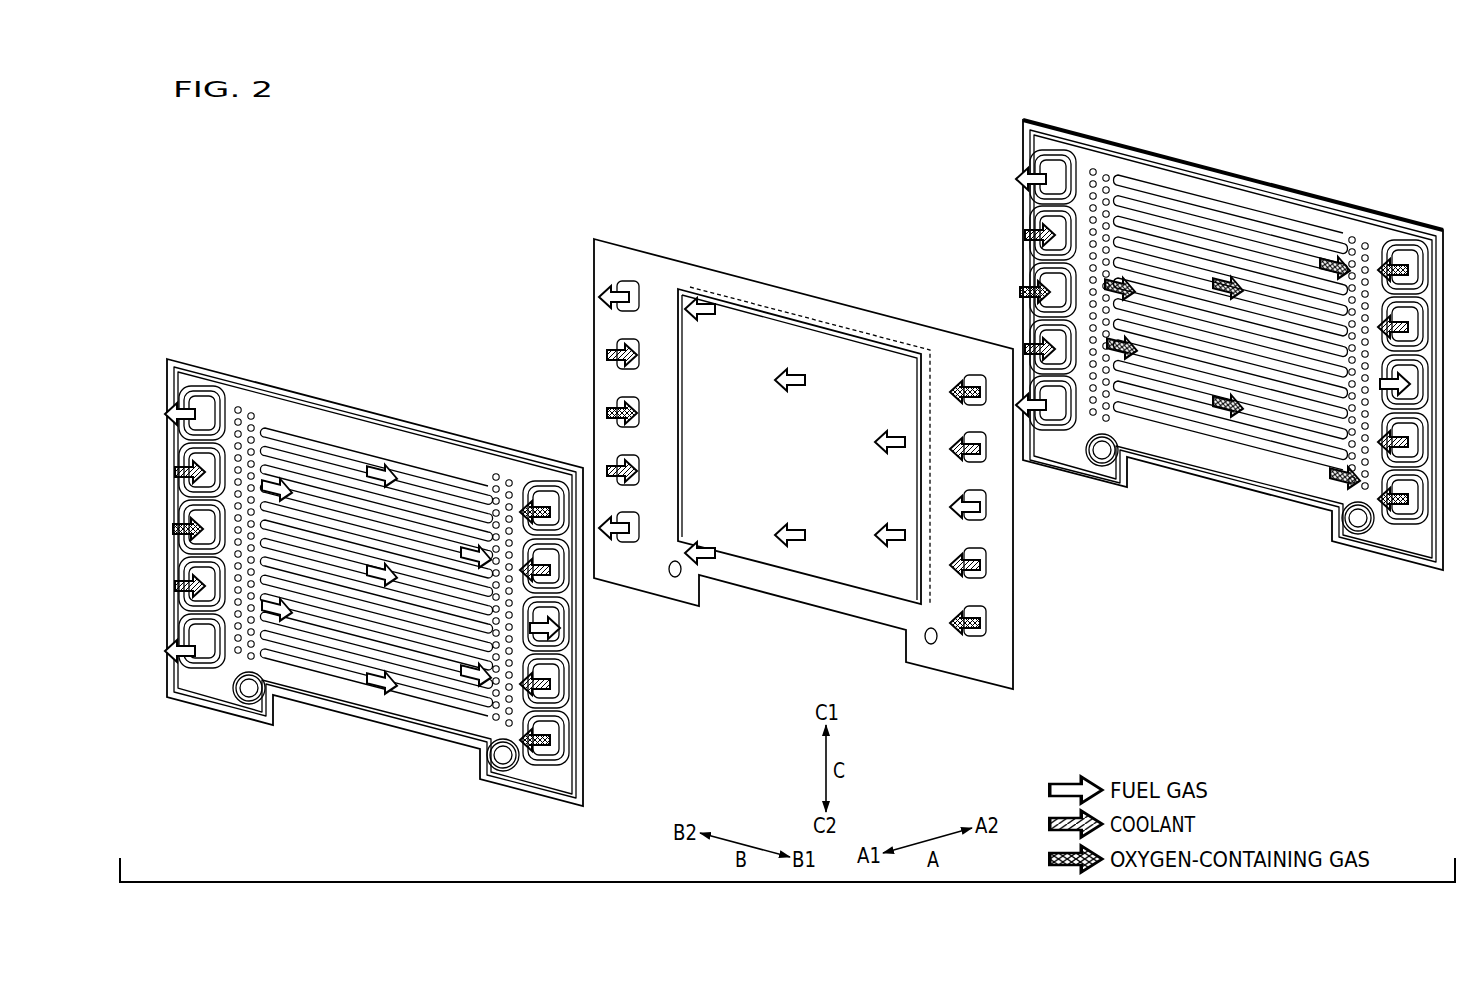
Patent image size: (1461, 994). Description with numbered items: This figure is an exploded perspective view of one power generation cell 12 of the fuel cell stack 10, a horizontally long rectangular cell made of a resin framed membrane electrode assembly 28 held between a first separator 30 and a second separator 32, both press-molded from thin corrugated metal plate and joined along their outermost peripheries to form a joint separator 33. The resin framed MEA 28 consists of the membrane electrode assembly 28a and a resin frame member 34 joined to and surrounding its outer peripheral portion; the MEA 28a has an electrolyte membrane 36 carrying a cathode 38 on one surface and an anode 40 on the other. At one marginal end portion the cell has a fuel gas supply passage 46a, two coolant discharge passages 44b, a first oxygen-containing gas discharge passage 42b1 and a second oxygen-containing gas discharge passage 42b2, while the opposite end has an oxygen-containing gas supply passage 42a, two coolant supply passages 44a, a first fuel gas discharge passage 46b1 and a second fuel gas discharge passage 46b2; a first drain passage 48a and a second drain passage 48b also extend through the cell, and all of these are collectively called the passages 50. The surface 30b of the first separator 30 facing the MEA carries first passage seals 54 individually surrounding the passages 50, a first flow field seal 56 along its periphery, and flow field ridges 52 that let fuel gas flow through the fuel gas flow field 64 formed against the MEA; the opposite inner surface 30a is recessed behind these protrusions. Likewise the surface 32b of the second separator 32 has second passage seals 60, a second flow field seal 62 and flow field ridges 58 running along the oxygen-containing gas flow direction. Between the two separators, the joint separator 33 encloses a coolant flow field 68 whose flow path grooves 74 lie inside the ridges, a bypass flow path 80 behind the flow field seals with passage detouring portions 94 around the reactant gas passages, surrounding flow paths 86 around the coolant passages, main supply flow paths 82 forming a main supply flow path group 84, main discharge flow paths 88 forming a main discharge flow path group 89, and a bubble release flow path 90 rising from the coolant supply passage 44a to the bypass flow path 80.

The power generation cell 10 is at (443, 141).
The power generation cell 12 is at (578, 220).
The resin framed membrane electrode assembly 28 is at (752, 198).
The membrane electrode assembly 28a is at (723, 296).
The first separator 30 is at (184, 356).
The inner surface 30a is at (282, 404).
The surface 30b is at (320, 418).
The second separator 32 is at (1017, 128).
The surface 32b is at (1108, 150).
The joint separator 33 is at (931, 83).
The resin frame member 34 is at (670, 272).
The electrolyte membrane 36 is at (822, 572).
The cathode 38 is at (812, 318).
The anode 40 is at (797, 573).
The oxygen-containing gas supply passage 42a is at (210, 520).
The first oxygen-containing gas discharge passage 42b1 is at (547, 500).
The second oxygen-containing gas discharge passage 42b2 is at (556, 740).
The coolant supply passage 44a is at (208, 462).
The coolant discharge passage 44b is at (556, 567).
The fuel gas supply passage 46a is at (563, 625).
The first fuel gas discharge passage 46b1 is at (204, 396).
The second fuel gas discharge passage 46b2 is at (205, 657).
The first drain passage 48a is at (503, 762).
The second drain passage 48b is at (250, 696).
The passages 50 is at (460, 546).
The flow field ridges 52 is at (420, 448).
The first passage seals 54 is at (212, 398).
The first flow field seal 56 is at (390, 432).
The flow field ridges 58 is at (1182, 193).
The second passage seals 60 is at (1058, 158).
The second flow field seal 62 is at (1237, 207).
The fuel gas flow field 64 is at (444, 470).
The coolant flow field 68 is at (341, 692).
The flow path grooves 74 is at (350, 432).
The bypass flow path 80 is at (352, 432).
The main supply flow paths 82 is at (200, 502).
The main supply flow path group 84 is at (140, 545).
The surrounding flow paths 86 is at (562, 582).
The main discharge flow paths 88 is at (520, 548).
The main discharge flow path group 89 is at (462, 605).
The bubble release flow path 90 is at (182, 444).
The passage detouring portions 94 is at (178, 398).